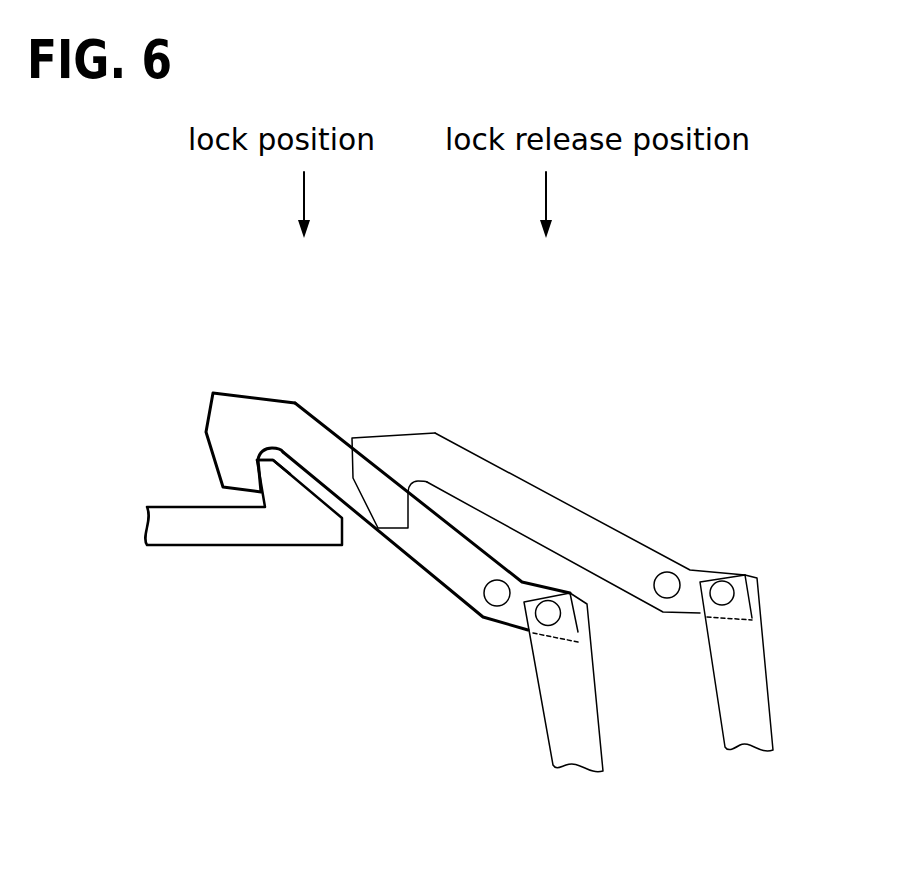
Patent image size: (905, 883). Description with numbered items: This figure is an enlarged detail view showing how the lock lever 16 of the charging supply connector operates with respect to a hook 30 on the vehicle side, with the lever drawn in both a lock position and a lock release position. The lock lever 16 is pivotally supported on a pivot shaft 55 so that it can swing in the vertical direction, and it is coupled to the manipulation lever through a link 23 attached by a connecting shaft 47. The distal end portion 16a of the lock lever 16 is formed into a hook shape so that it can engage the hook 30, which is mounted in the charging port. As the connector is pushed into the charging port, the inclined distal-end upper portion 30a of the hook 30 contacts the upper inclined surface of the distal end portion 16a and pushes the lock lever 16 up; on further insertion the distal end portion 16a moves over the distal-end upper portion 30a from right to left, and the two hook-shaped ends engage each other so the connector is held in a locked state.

The lock lever 16 is at (438, 565).
The distal end portion 16a is at (237, 418).
The link 23 is at (580, 713).
The hook 30 is at (222, 530).
The distal-end upper portion 30a is at (268, 448).
The connecting shaft 47 is at (548, 613).
The pivot shaft 55 is at (497, 593).